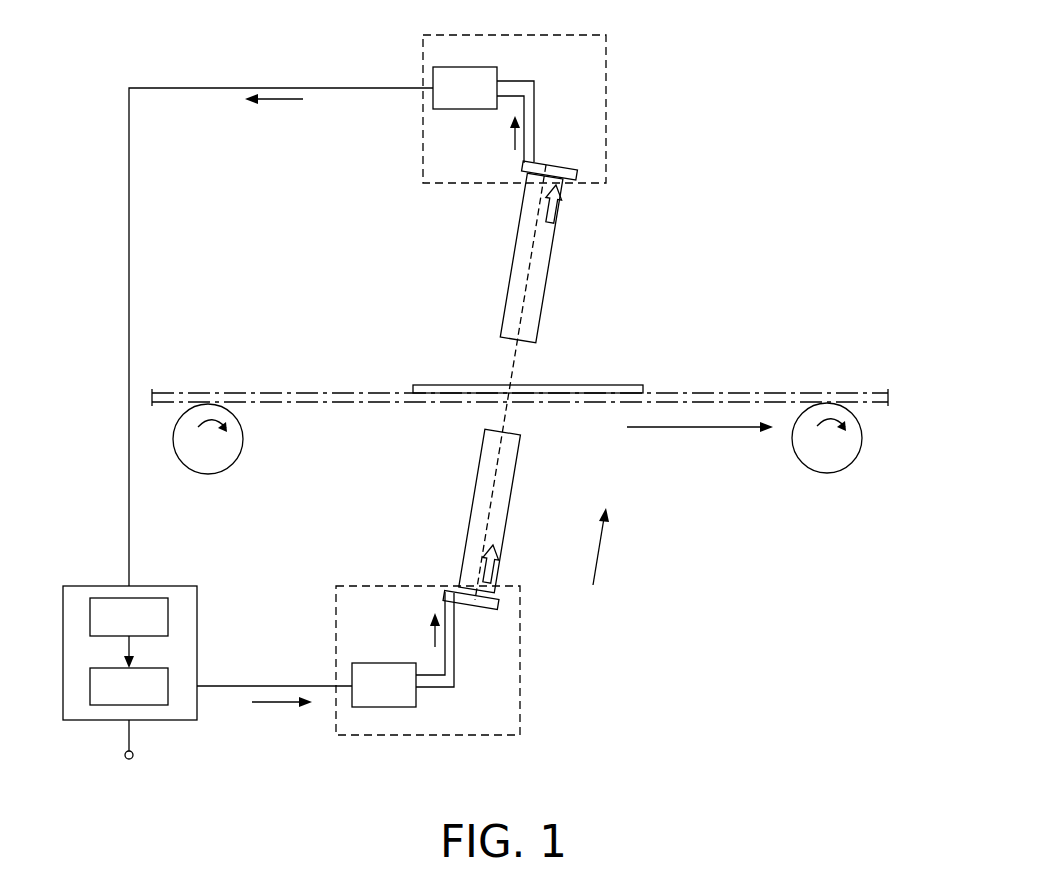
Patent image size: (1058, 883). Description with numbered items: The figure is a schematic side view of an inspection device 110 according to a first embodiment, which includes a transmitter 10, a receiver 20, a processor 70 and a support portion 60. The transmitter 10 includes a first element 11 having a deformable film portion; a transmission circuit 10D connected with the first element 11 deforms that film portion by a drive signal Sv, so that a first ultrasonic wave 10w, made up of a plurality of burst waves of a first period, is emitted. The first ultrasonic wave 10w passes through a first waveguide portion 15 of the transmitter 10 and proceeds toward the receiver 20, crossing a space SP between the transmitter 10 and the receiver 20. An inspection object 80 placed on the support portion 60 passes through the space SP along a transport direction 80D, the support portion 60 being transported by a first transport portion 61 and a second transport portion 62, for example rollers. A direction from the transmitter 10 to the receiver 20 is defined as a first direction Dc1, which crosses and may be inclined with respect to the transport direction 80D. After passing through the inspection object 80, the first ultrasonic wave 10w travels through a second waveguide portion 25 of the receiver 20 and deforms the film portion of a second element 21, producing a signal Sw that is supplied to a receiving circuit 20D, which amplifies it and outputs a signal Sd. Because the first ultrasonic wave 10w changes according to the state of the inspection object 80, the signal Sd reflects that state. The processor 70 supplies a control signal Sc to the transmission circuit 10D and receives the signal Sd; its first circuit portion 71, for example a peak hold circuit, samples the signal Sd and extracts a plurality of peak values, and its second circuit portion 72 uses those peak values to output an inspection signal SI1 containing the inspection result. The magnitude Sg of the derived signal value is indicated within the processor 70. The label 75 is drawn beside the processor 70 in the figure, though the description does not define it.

The inspection device 110 is at (880, 155).
The transmitter 10 is at (520, 668).
The transmission circuit 10D is at (416, 700).
The first ultrasonic wave 10w is at (560, 210).
The first element 11 is at (498, 603).
The first waveguide portion 15 is at (503, 520).
The receiver 20 is at (606, 95).
The receiving circuit 20D is at (497, 69).
The second element 21 is at (578, 174).
The second waveguide portion 25 is at (552, 267).
The support portion 60 is at (715, 392).
The first transport portion 61 is at (173, 450).
The second transport portion 62 is at (862, 453).
The processor 70 is at (177, 585).
The first circuit portion 71 is at (168, 614).
The second circuit portion 72 is at (168, 686).
The control device 75 is at (151, 638).
The inspection object 80 is at (617, 385).
The transport direction 80D is at (670, 428).
The space SP is at (540, 365).
The control signal Sc is at (290, 705).
The signal Sd is at (280, 102).
The magnitude of the derived signal value Sg is at (127, 655).
The signal Sw is at (512, 140).
The drive signal Sv is at (430, 633).
The inspection signal SI1 is at (133, 757).
The first direction Dc1 is at (596, 575).